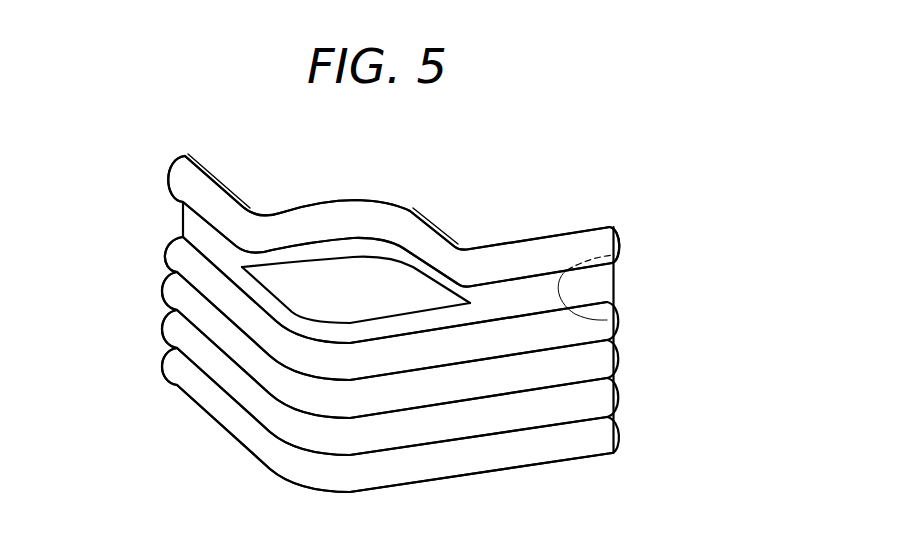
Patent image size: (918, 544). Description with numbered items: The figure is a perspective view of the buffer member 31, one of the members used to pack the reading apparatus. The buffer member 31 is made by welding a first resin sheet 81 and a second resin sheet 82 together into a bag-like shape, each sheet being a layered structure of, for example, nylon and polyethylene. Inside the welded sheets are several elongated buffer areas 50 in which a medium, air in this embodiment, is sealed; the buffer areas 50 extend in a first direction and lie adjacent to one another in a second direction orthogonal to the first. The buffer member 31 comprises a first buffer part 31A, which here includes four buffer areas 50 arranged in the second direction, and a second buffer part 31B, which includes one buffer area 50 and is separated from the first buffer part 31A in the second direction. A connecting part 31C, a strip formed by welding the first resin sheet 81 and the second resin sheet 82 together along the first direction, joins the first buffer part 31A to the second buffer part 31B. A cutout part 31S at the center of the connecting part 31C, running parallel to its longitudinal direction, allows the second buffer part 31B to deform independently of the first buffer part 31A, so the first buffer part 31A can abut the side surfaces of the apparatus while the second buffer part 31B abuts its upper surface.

The buffer member 31 is at (650, 198).
The first buffer part 31A is at (116, 243).
The second buffer part 31B is at (116, 173).
The connecting part 31C is at (192, 222).
The cutout part 31S is at (360, 322).
The buffer area 50 is at (177, 184).
The first resin sheet 81 is at (607, 320).
The second resin sheet 82 is at (614, 255).